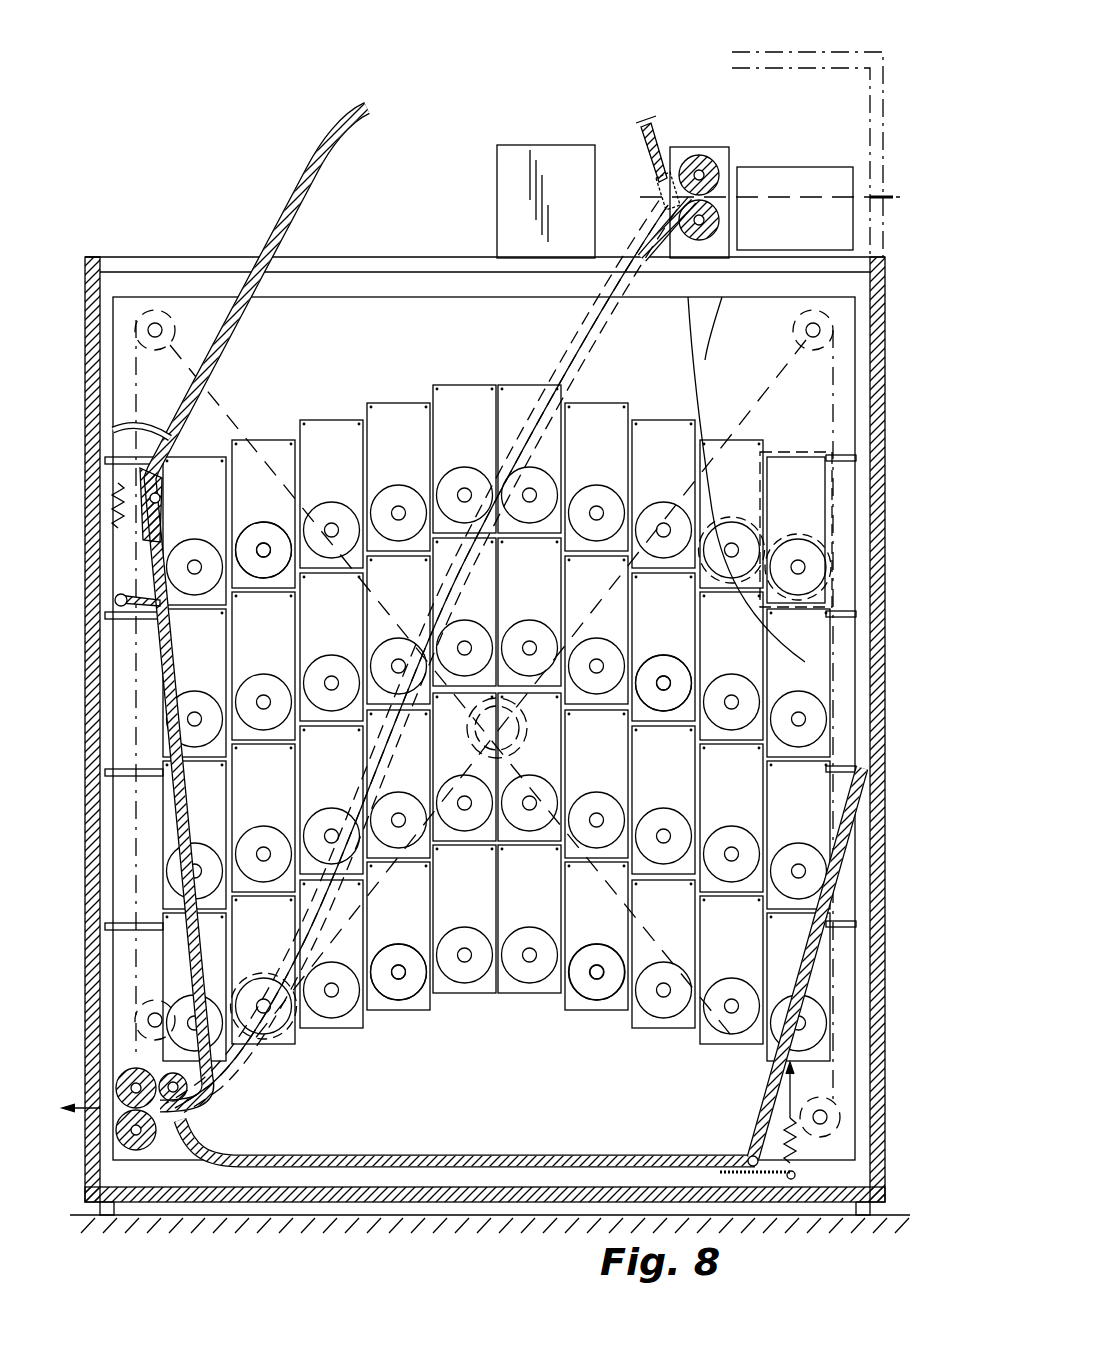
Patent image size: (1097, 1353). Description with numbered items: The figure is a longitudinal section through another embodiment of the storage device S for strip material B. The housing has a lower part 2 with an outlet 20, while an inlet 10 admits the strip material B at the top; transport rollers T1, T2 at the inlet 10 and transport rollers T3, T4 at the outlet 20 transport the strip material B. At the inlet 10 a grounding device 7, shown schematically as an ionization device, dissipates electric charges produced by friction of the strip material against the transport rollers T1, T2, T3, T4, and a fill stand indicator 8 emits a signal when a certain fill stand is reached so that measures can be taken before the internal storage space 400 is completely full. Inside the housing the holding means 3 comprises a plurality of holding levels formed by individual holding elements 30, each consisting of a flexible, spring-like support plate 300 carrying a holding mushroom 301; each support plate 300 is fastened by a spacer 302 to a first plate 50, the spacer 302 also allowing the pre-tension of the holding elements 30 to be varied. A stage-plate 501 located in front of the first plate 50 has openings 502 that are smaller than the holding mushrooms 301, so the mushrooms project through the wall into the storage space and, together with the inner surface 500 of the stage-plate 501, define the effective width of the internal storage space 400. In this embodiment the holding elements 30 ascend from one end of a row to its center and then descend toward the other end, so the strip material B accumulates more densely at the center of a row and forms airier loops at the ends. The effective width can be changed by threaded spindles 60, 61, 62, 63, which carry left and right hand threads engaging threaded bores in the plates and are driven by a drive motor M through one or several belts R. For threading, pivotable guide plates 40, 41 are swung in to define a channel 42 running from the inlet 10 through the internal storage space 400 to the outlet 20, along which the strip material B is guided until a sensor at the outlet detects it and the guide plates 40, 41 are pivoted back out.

The lower part 2 is at (103, 262).
The holding means 3 is at (425, 370).
The grounding device 7 is at (640, 138).
The fill stand indicator 8 is at (512, 190).
The inlet 10 is at (878, 192).
The outlet 20 is at (85, 1112).
The holding elements 30 is at (496, 744).
The guide plate 40 is at (293, 188).
The guide plate 41 is at (762, 1122).
The channel 42 is at (575, 352).
The first plate 50 is at (400, 325).
The threaded spindle 60 is at (832, 1115).
The threaded spindle 61 is at (800, 327).
The threaded spindle 62 is at (155, 340).
The threaded spindle 63 is at (145, 1022).
The support plate 300 is at (417, 461).
The holding mushroom 301 is at (270, 548).
The spacer 302 is at (120, 927).
The internal storage space 400 is at (362, 359).
The inner surface 500 is at (722, 348).
The stage-plate 501 is at (810, 419).
The openings 502 is at (782, 538).
The strip material B is at (790, 195).
The drive motor M is at (525, 740).
The belt R is at (240, 400).
The storage device S is at (815, 45).
The transport roller T1 is at (700, 165).
The transport roller T2 is at (722, 218).
The transport roller T3 is at (137, 1150).
The transport roller T4 is at (118, 1085).